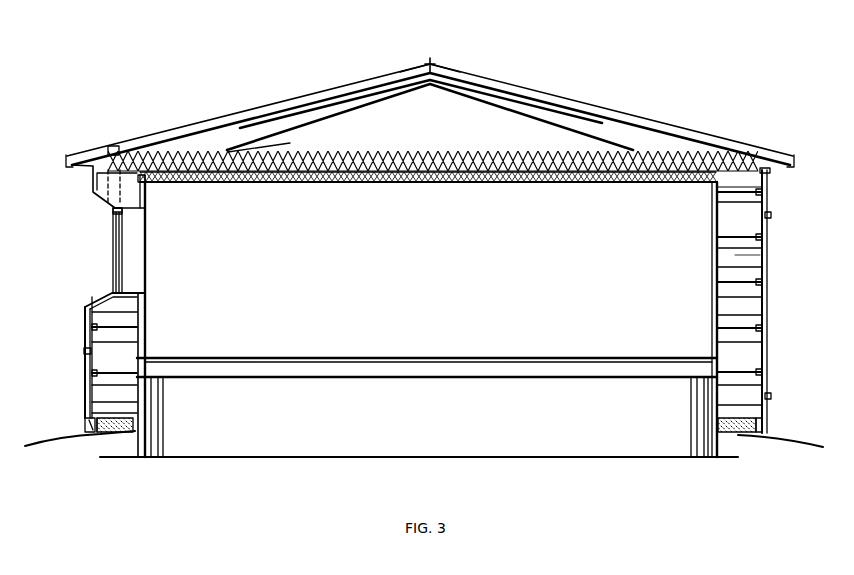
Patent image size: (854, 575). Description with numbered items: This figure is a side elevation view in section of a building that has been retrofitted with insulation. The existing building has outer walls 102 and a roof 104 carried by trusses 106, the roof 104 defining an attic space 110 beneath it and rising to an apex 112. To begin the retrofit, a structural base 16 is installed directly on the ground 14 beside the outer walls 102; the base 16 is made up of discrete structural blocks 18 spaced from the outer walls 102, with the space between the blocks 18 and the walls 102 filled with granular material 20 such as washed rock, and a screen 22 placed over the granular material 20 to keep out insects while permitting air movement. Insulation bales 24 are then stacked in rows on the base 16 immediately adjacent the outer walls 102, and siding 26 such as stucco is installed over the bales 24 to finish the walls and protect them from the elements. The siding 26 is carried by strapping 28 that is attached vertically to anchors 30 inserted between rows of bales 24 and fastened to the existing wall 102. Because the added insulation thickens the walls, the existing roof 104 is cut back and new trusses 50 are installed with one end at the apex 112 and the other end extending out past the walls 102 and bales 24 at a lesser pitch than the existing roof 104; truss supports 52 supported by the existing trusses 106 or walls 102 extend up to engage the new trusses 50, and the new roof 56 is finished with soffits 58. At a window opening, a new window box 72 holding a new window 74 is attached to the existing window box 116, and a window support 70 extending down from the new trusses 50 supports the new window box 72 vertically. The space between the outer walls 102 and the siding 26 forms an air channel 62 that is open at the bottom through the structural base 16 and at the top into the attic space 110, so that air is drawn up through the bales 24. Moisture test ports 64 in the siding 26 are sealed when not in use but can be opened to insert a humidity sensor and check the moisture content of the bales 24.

The ground 14 is at (43, 447).
The structural base 16 is at (85, 424).
The structural blocks 18 is at (92, 426).
The granular material 20 is at (99, 433).
The screen 22 is at (110, 433).
The bales 24 is at (110, 393).
The siding 26 is at (85, 335).
The strapping 28 is at (768, 418).
The anchors 30 is at (747, 253).
The new trusses 50 is at (250, 103).
The truss supports 52 is at (162, 140).
The new roof 56 is at (318, 92).
The soffits 58 is at (95, 190).
The air channel 62 is at (772, 200).
The moisture test ports 64 is at (85, 351).
The window support 70 is at (113, 148).
The new window box 72 is at (120, 213).
The new window 74 is at (112, 228).
The outer walls 102 is at (143, 330).
The roof 104 is at (520, 112).
The trusses 106 is at (300, 115).
The attic space 110 is at (245, 145).
The apex 112 is at (430, 66).
The existing window box 116 is at (112, 293).